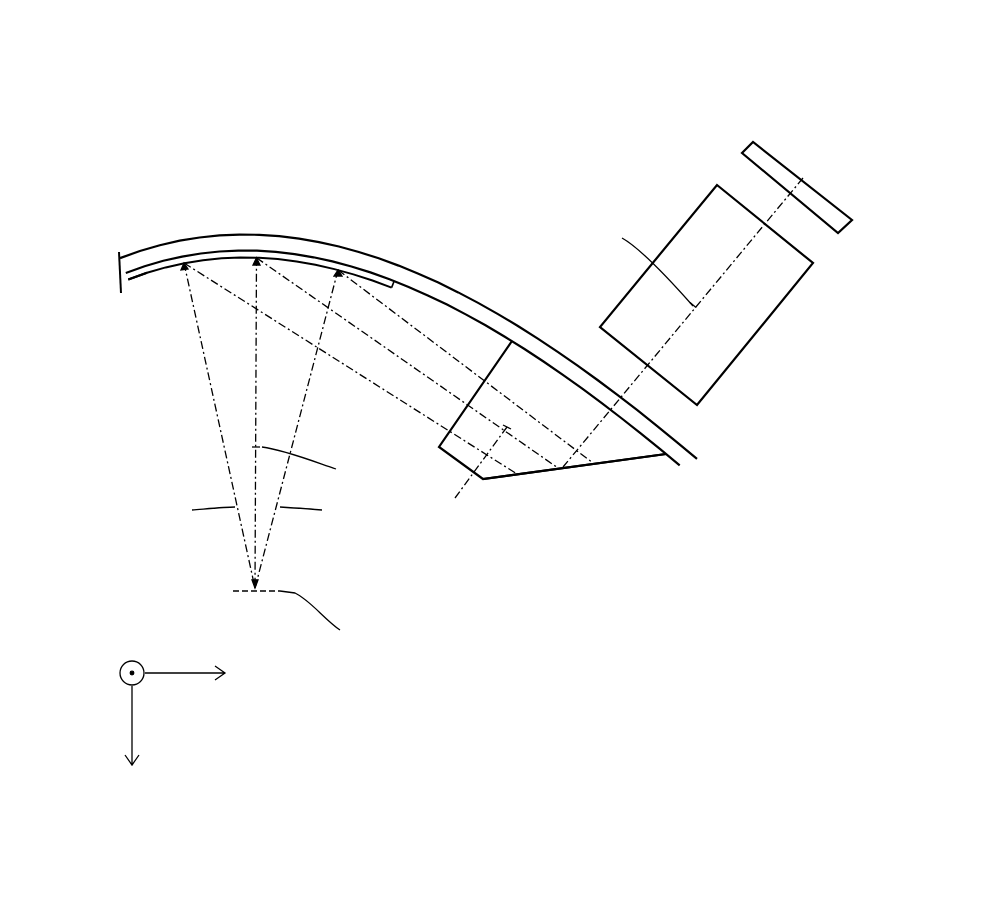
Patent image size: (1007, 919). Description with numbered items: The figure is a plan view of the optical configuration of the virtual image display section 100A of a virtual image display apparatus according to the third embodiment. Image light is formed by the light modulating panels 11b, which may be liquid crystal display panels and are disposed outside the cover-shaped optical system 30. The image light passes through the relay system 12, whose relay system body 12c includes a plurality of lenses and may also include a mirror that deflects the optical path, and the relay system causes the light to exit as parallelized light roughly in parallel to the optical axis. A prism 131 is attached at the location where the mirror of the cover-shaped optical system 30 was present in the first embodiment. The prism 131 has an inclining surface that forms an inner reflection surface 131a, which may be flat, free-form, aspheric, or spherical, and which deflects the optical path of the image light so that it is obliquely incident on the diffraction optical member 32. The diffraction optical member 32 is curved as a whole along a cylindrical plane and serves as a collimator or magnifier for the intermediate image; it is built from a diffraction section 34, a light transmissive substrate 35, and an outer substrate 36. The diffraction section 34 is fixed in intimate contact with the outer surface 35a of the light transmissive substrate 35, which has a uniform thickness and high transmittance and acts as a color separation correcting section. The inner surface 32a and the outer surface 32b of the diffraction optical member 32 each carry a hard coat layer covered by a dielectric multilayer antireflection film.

The virtual image display section 100A is at (618, 108).
The cover-shaped optical system 30 is at (503, 238).
The diffraction optical member 32 is at (313, 218).
The outer substrate 36 is at (234, 247).
The diffraction section 34 is at (275, 251).
The light transmissive substrate 35 is at (201, 258).
The outer surface of light transmissive substrate 35a is at (348, 266).
The outer surface of diffraction optical member 32b is at (145, 253).
The inner surface of diffraction optical member 32a is at (143, 284).
The prism 131 is at (530, 461).
The inner reflection surface 131a is at (597, 463).
The relay system 12 is at (758, 480).
The relay system body 12c is at (742, 330).
The light modulating panels 11b is at (780, 158).